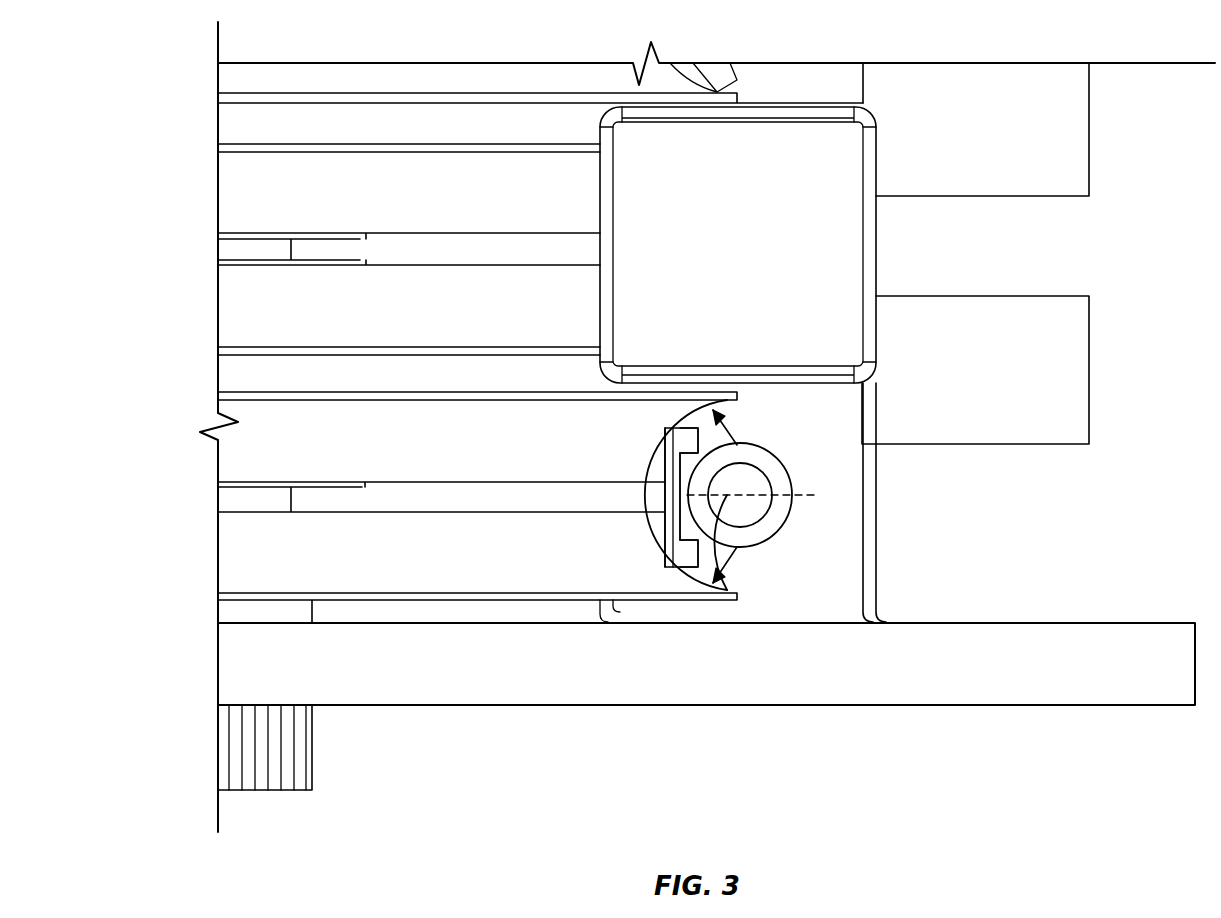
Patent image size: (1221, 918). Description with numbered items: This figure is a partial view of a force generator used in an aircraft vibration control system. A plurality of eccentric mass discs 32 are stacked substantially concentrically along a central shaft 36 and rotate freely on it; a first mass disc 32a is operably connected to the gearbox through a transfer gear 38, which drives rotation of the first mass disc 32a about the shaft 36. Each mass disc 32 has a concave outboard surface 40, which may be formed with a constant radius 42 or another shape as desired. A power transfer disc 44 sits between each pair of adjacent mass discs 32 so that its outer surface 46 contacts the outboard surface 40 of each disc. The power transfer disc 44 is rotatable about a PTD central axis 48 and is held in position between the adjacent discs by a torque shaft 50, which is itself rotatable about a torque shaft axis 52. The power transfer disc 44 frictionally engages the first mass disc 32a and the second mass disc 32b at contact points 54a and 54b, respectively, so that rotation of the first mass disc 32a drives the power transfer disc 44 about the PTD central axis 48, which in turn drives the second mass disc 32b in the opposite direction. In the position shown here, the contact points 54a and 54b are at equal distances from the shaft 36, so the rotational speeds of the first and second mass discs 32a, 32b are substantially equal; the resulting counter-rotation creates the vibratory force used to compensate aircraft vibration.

The eccentric mass disc 32 is at (233, 193).
The first mass disc 32a is at (233, 565).
The second mass disc 32b is at (233, 452).
The central shaft 36 is at (302, 772).
The transfer gear 38 is at (1010, 660).
The concave outboard surface 40 is at (647, 463).
The constant radius 42 is at (727, 427).
The power transfer disc 44 is at (677, 497).
The outer surface 46 is at (690, 428).
The PTD central axis 48 is at (802, 497).
The torque shaft 50 is at (757, 540).
The torque shaft axis 52 is at (750, 485).
The contact point 54a is at (672, 572).
The contact point 54b is at (663, 427).